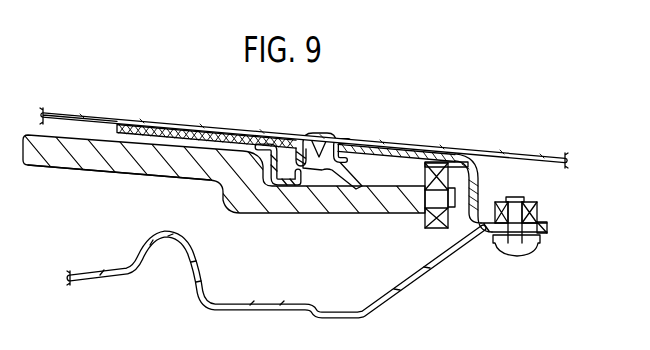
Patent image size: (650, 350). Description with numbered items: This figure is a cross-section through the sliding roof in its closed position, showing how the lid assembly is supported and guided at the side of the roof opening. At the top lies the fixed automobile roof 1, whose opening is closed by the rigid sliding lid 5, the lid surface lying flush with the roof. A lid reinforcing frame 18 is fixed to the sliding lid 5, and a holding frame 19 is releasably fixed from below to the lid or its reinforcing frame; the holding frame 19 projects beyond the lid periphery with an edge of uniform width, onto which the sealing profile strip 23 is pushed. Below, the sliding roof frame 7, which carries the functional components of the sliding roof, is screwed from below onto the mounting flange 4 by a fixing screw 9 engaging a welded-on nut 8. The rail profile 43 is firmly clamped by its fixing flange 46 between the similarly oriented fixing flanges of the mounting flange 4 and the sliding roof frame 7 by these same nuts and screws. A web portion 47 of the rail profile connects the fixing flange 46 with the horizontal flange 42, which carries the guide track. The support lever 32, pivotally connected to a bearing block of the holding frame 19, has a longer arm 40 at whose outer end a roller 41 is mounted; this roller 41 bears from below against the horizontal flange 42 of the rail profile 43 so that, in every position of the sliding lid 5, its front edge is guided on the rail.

The fixed automobile roof 1 is at (538, 156).
The mounting flange 4 is at (480, 189).
The sliding lid 5 is at (98, 120).
The sliding roof frame 7 is at (424, 268).
The welded-on nut 8 is at (537, 210).
The fixing screw 9 is at (515, 253).
The lid reinforcing frame 18 is at (251, 134).
The holding frame 19 is at (155, 124).
The sealing profile strip 23 is at (319, 131).
The support lever 32 is at (80, 170).
The longer arm 40 is at (160, 170).
The roller 41 is at (428, 228).
The flange 42 is at (443, 152).
The rail profile 43 is at (417, 169).
The fixing flange 46 is at (548, 228).
The web portion 47 is at (464, 229).